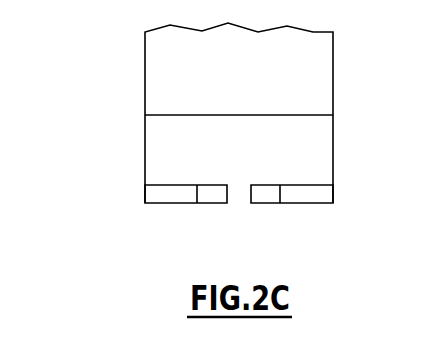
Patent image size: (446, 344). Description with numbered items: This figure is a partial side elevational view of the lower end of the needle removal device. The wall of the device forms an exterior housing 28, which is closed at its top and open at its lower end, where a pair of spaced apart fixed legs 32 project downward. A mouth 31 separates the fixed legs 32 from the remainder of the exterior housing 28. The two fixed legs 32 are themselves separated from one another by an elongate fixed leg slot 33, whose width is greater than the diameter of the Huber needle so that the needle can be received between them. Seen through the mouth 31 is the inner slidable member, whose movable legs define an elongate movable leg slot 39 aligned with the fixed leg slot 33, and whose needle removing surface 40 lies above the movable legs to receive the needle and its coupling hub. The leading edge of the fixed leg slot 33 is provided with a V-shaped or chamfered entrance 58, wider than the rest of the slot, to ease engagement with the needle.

The exterior housing 28 is at (145, 86).
The mouth 31 is at (166, 141).
The fixed legs 32 is at (163, 205).
The elongate fixed leg slot 33 is at (238, 204).
The elongate movable leg slot 39 is at (237, 186).
The needle removing surface 40 is at (303, 142).
The chamfered entrance 58 is at (263, 205).